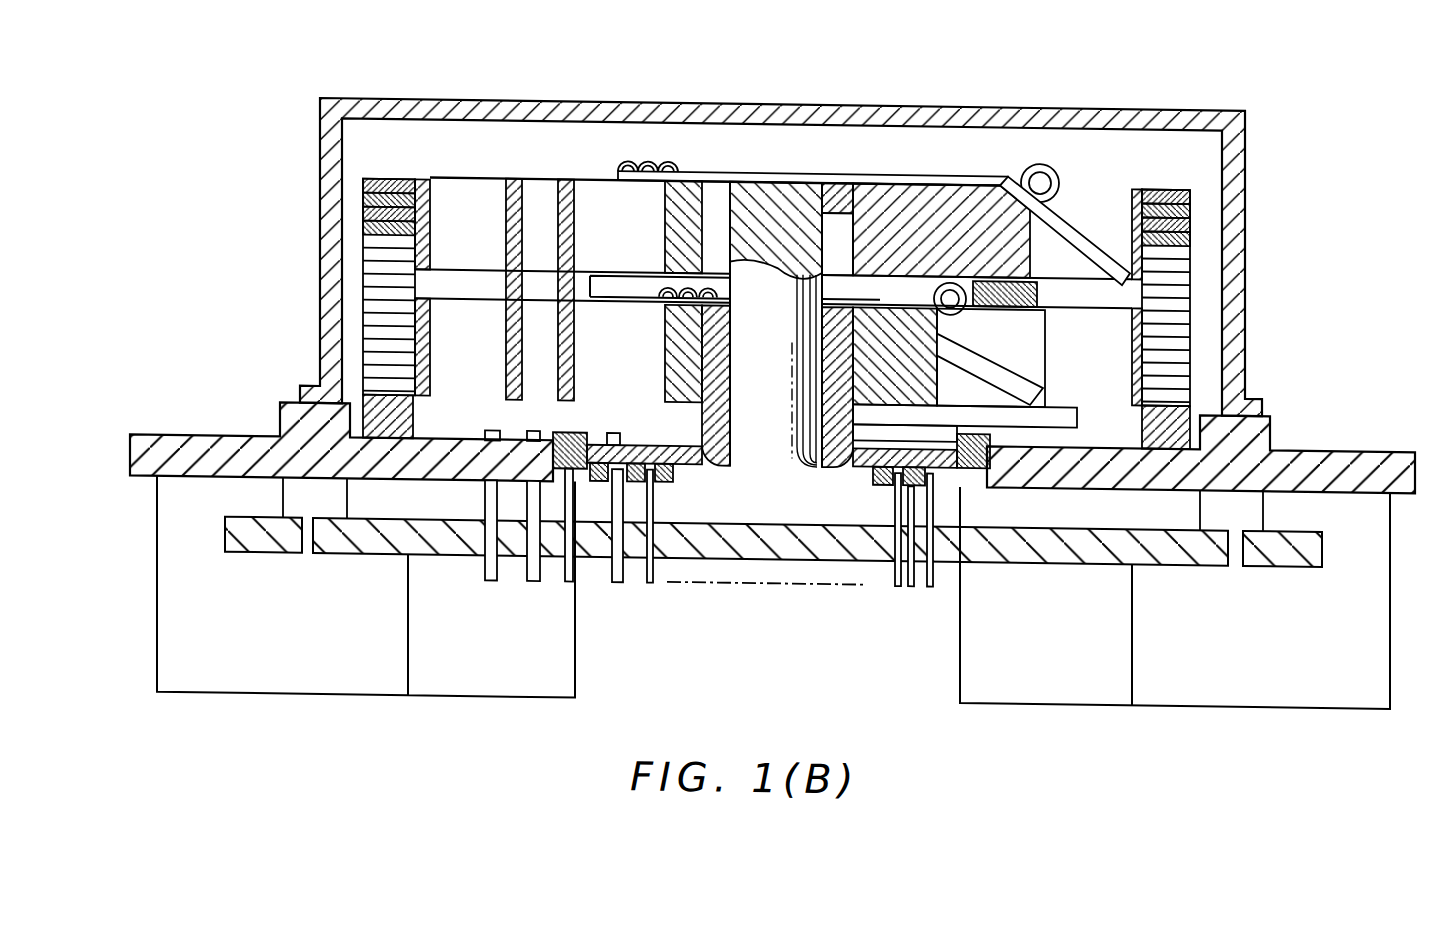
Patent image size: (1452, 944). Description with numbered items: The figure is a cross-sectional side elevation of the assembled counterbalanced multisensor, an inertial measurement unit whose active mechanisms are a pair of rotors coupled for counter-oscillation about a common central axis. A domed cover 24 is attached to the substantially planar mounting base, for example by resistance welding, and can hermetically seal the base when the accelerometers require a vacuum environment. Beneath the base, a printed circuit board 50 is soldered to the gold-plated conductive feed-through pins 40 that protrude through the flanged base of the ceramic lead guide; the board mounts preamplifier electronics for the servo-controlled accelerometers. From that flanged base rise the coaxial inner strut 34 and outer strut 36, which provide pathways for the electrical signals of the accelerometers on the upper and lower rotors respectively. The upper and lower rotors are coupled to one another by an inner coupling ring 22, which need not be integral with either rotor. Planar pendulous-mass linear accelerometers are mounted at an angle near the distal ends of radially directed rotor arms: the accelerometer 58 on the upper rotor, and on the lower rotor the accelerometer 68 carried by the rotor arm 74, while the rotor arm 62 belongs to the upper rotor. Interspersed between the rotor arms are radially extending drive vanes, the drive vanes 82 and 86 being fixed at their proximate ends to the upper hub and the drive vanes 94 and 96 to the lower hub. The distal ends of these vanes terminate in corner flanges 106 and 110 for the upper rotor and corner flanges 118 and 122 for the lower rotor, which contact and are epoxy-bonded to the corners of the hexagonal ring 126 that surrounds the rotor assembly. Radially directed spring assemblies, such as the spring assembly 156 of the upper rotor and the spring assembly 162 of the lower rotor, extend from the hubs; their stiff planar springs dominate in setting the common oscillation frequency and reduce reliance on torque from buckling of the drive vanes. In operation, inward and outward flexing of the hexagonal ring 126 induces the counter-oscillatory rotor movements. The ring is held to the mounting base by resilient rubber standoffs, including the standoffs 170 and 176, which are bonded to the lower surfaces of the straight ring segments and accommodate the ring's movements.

The domed cover 24 is at (906, 98).
The corner flange 118 is at (1133, 393).
The printed circuit board 50 is at (264, 545).
The standoff 170 is at (392, 420).
The standoff 176 is at (1157, 430).
The drive vane 96 is at (445, 332).
The hexagonal ring 126 is at (393, 176).
The corner flange 122 is at (428, 366).
The corner flange 110 is at (432, 201).
The corner flange 106 is at (1138, 177).
The drive vane 86 is at (484, 185).
The spring assembly 156 is at (507, 147).
The inner strut 34 is at (775, 382).
The rotor arm 62 is at (1014, 237).
The drive vane 82 is at (1083, 186).
The accelerometer 58 is at (1092, 230).
The inner coupling ring 22 is at (1040, 291).
The rotor arm 74 is at (928, 350).
The accelerometer 68 is at (1010, 345).
The drive vane 94 is at (1074, 380).
The outer strut 36 is at (683, 439).
The spring assembly 162 is at (503, 402).
The conductive feed-through pins 40 is at (617, 578).